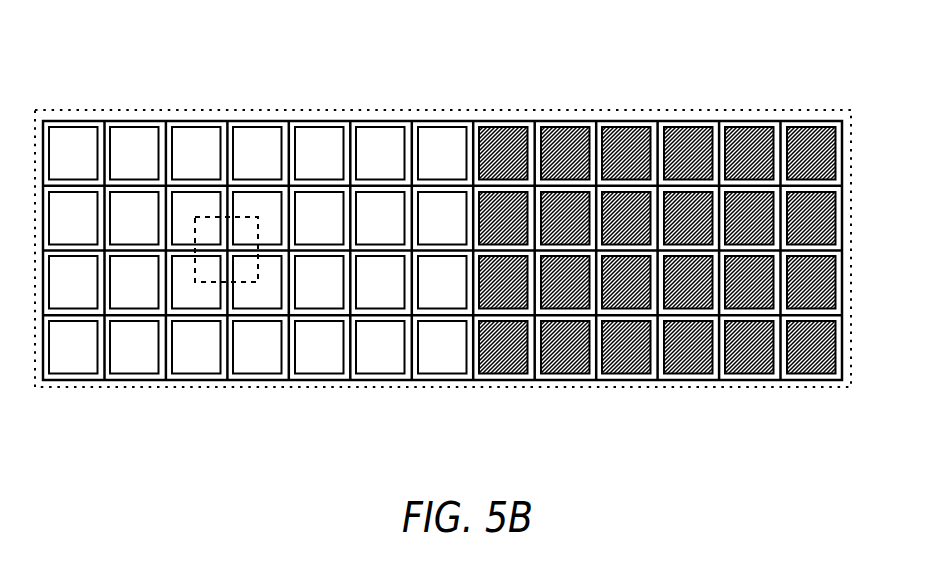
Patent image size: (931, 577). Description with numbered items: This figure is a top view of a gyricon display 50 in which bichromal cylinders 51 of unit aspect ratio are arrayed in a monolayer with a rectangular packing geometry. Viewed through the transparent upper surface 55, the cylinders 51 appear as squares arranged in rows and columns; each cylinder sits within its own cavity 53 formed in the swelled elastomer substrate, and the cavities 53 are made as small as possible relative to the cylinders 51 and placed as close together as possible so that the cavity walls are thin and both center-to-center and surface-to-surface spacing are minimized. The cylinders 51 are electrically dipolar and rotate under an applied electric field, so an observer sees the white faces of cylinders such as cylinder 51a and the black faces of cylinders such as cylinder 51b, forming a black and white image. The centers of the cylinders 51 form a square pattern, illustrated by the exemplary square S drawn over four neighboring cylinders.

The display 50 is at (155, 60).
The bichromal cylinders 51 is at (502, 217).
The cylinder 51a is at (379, 140).
The cylinder 51b is at (623, 133).
The cavities 53 is at (197, 125).
The upper surface 55 is at (557, 108).
The exemplary square S is at (247, 217).